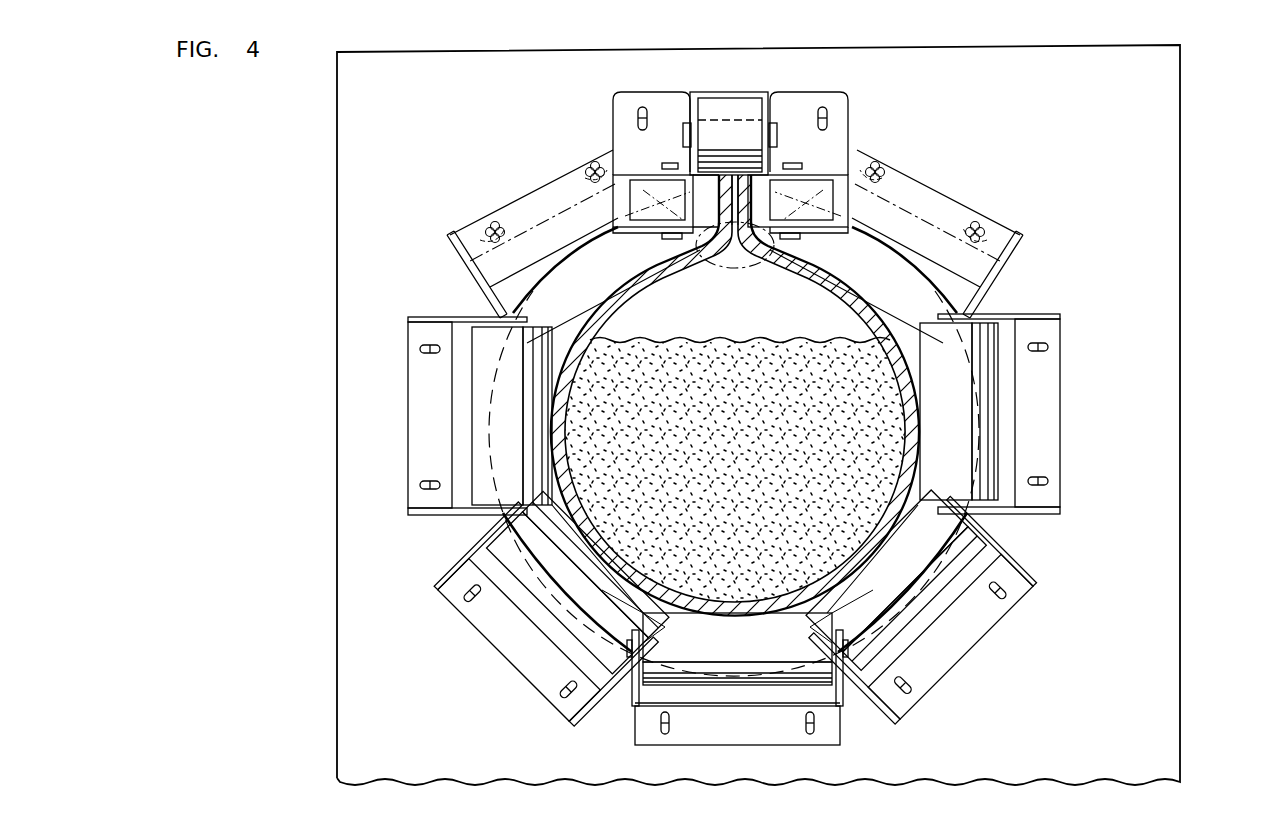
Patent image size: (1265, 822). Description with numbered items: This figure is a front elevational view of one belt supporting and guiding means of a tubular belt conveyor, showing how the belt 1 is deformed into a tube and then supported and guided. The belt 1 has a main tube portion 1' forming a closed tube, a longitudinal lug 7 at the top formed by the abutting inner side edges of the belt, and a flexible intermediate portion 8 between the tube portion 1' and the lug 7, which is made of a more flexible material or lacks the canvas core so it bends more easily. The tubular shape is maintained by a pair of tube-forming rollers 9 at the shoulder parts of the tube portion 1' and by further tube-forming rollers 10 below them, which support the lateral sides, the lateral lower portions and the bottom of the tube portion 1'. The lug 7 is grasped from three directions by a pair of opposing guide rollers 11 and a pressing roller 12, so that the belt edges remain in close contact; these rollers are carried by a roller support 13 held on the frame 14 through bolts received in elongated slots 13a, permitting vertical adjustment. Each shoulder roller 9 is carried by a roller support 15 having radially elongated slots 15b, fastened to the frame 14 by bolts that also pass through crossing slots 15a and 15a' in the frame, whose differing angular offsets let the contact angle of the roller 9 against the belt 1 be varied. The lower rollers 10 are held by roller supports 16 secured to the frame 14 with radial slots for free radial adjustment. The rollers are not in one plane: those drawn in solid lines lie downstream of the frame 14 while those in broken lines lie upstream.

The belt 1 is at (735, 388).
The tube portion 1' is at (702, 451).
The longitudinal lug 7 is at (735, 190).
The flexible intermediate portion 8 is at (739, 270).
The tube-forming rollers 9 is at (498, 301).
The tube-forming rollers 10 is at (485, 436).
The guide rollers 11 is at (652, 185).
The pressing roller 12 is at (750, 105).
The roller support 13 is at (657, 105).
The elongated slots 13a is at (639, 110).
The frame 14 is at (1167, 166).
The roller support 15 is at (512, 205).
The slot 15a is at (759, 137).
The slot 15a' is at (716, 214).
The radially elongated slots 15b is at (588, 172).
The roller supports 16 is at (418, 398).